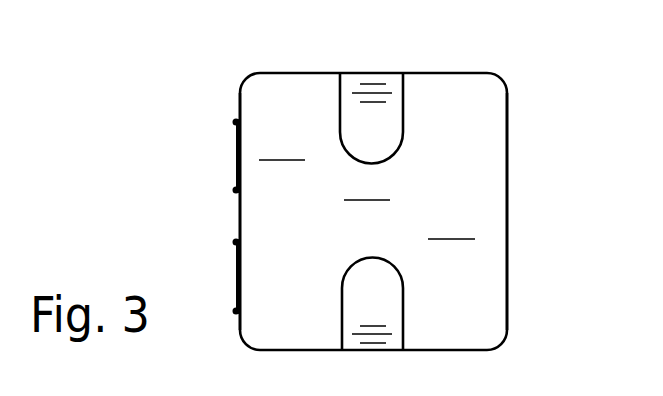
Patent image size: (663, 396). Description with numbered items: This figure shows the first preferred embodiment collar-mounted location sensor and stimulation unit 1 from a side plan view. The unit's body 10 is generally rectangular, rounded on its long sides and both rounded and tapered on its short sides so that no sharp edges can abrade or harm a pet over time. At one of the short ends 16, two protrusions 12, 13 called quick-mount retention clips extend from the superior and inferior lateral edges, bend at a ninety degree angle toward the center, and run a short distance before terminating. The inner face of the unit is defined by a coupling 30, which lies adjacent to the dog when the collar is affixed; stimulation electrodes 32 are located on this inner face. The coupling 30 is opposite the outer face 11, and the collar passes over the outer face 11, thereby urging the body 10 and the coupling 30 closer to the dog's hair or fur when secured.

The collar-mounted location sensor and stimulation unit 1 is at (224, 50).
The body 10 is at (418, 71).
The outer face 11 is at (507, 200).
The quick-mount retention clip 12 is at (388, 305).
The quick-mount retention clip 13 is at (388, 151).
The short end 16 is at (457, 181).
The coupling 30 is at (238, 207).
The stimulation electrodes 32 is at (235, 160).